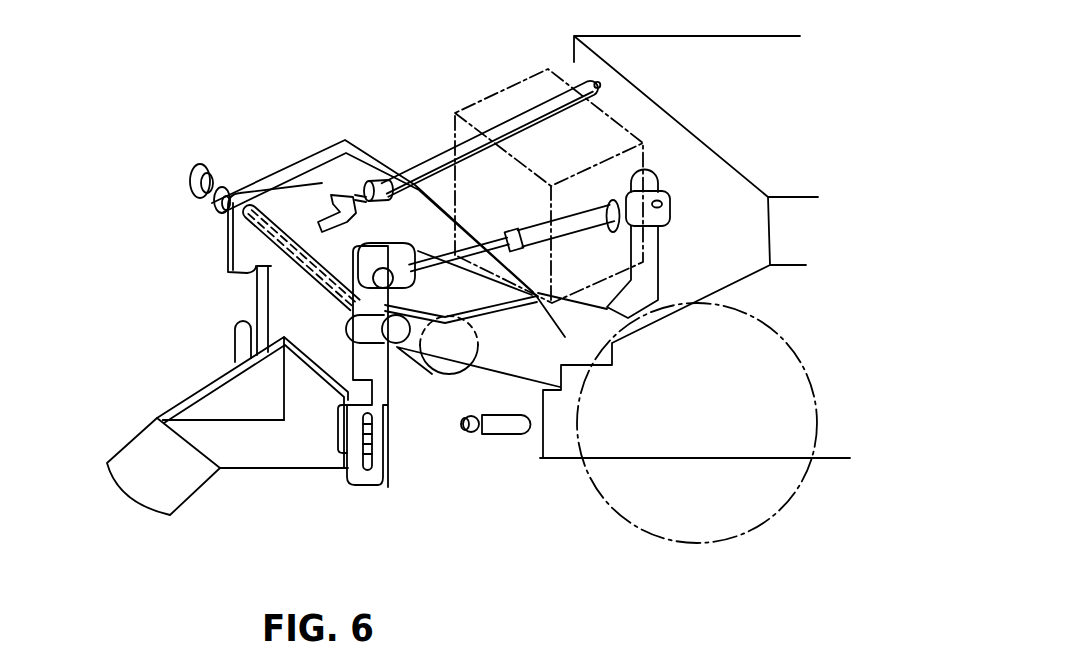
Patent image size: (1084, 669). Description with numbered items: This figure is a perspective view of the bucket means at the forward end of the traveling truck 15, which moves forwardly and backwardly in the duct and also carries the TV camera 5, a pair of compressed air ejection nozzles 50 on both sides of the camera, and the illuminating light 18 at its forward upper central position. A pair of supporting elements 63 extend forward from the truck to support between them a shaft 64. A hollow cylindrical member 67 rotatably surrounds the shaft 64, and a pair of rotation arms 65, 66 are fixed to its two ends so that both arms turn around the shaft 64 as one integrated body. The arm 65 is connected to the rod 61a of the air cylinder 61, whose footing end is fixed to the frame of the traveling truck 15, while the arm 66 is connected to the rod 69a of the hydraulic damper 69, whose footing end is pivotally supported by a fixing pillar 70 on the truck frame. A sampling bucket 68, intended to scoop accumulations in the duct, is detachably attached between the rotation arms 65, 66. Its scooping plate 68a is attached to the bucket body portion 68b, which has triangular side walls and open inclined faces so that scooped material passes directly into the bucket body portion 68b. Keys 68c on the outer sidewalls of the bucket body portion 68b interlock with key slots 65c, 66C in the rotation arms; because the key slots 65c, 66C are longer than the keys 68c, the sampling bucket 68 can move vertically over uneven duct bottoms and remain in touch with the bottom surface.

The TV camera 5 is at (433, 372).
The traveling truck 15 is at (562, 460).
The illuminating light 18 is at (515, 84).
The compressed air ejection nozzle 50 is at (498, 435).
The air cylinder 61 is at (425, 155).
The rod of the air cylinder 61a is at (362, 180).
The supporting element 63 is at (280, 170).
The shaft 64 is at (197, 196).
The rotation arm 65 is at (228, 244).
The key slot 65c is at (240, 308).
The rotation arm 66 is at (382, 427).
The key slot 66C is at (379, 427).
The hollow cylindrical member 67 is at (285, 272).
The sampling bucket 68 is at (128, 402).
The scooping plate 68a is at (148, 483).
The bucket body portion 68b is at (233, 443).
The key 68c is at (260, 345).
The hydraulic damper 69 is at (572, 212).
The rod of the hydraulic damper 69a is at (459, 249).
The fixing pillar 70 is at (662, 247).